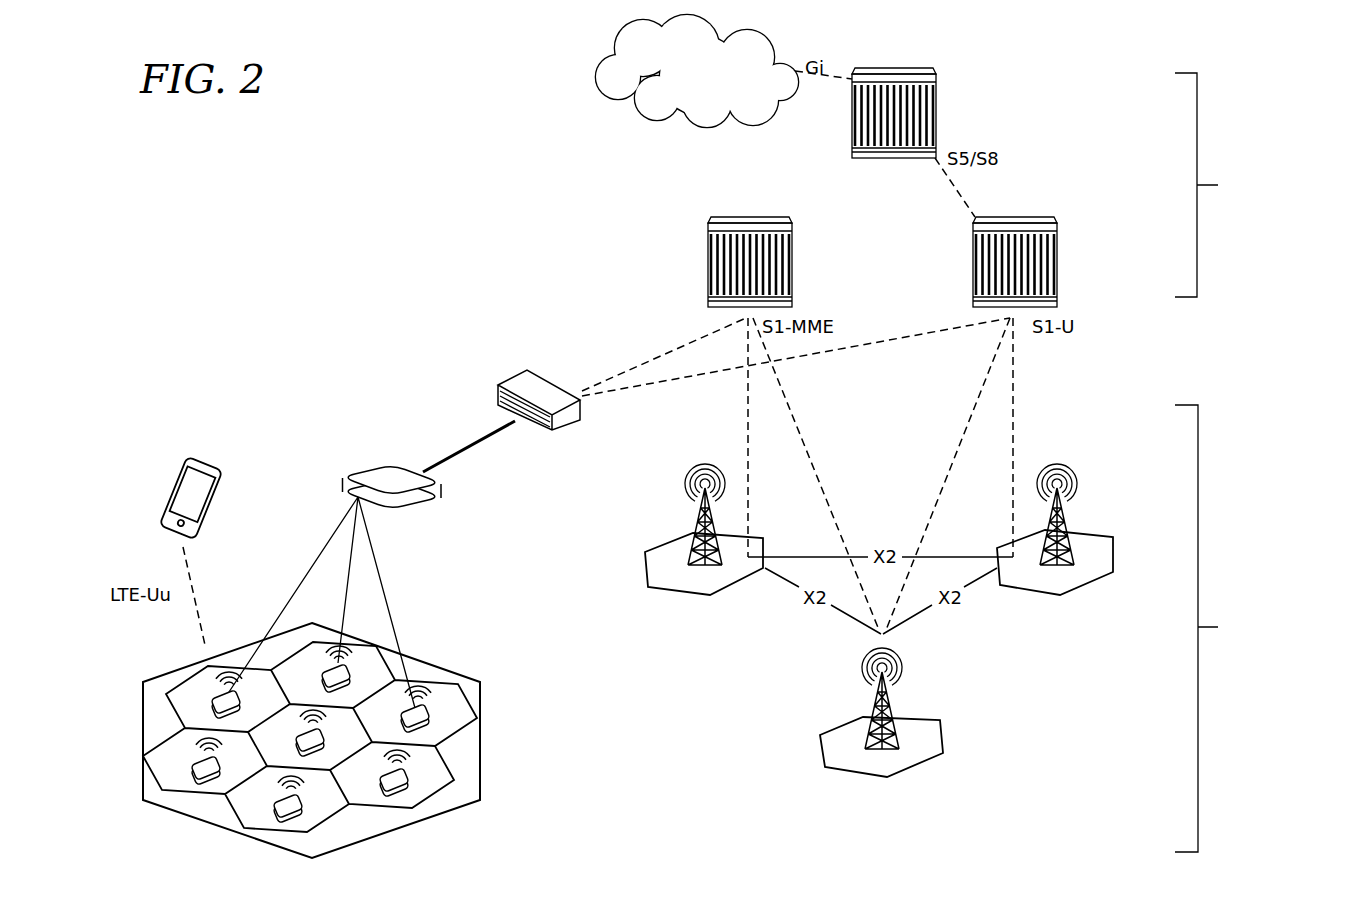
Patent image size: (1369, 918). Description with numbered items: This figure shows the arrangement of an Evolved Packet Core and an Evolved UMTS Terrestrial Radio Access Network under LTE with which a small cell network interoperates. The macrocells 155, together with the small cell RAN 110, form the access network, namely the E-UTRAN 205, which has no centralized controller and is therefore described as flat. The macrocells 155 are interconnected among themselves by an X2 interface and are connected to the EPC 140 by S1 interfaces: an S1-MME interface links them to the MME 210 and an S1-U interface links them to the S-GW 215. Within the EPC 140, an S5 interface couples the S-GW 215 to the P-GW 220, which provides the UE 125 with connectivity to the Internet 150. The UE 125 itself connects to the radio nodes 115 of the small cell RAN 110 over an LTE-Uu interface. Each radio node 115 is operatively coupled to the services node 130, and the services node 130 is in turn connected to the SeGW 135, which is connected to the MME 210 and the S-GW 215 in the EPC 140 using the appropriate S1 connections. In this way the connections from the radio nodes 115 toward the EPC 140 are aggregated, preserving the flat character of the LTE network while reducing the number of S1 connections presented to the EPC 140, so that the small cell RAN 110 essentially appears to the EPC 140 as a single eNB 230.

The small cell RAN 110 is at (343, 728).
The radio nodes 115 is at (465, 744).
The UE 125 is at (182, 465).
The services node 130 is at (444, 493).
The SeGW 135 is at (527, 370).
The EPC 140 is at (990, 173).
The Internet 150 is at (607, 62).
The macrocells 155 is at (880, 620).
The E-UTRAN 205 is at (972, 628).
The MME 210 is at (793, 233).
The S-GW 215 is at (1058, 247).
The P-GW 220 is at (937, 83).
The single eNB 230 is at (482, 697).